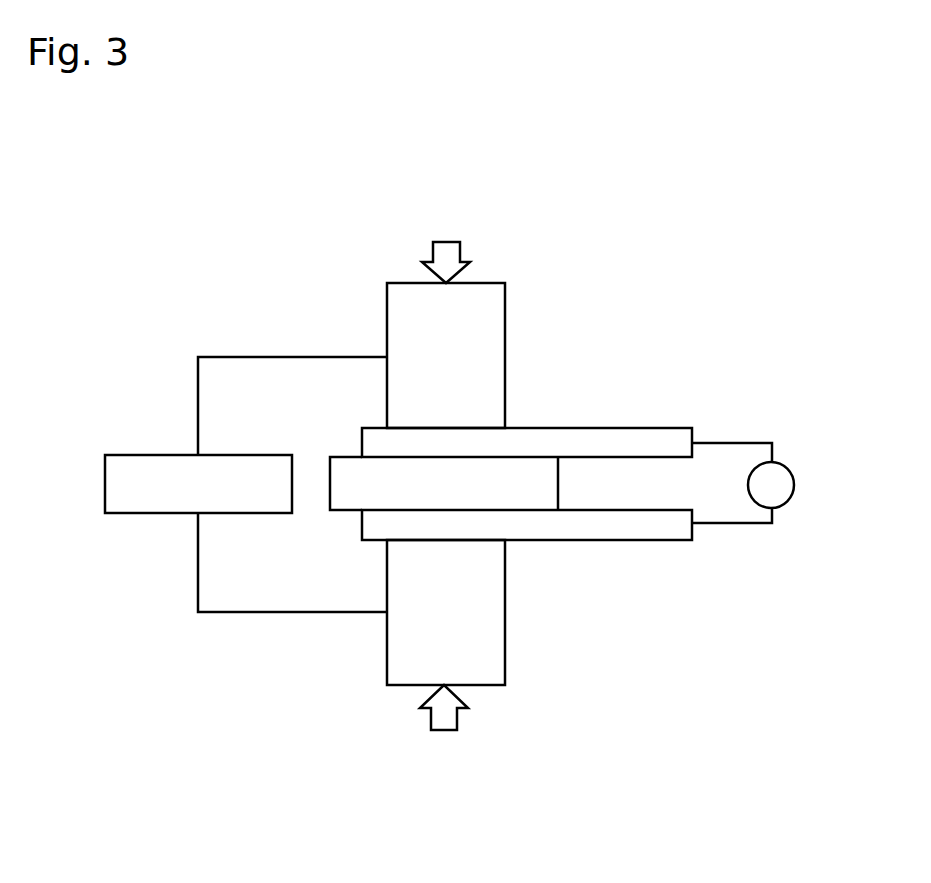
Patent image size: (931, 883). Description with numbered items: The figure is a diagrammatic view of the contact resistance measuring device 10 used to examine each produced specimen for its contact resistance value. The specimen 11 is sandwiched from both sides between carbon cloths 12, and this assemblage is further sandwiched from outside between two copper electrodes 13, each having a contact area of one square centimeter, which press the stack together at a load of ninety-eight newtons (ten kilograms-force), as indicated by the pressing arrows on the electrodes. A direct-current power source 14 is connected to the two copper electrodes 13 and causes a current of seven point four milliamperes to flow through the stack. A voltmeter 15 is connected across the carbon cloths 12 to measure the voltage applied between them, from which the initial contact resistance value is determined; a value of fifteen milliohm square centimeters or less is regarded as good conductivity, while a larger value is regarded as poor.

The contact resistance measuring device 10 is at (542, 192).
The specimen 11 is at (330, 480).
The carbon cloths 12 is at (640, 458).
The copper electrodes 13 is at (520, 578).
The direct-current power source 14 is at (147, 455).
The voltmeter 15 is at (795, 478).